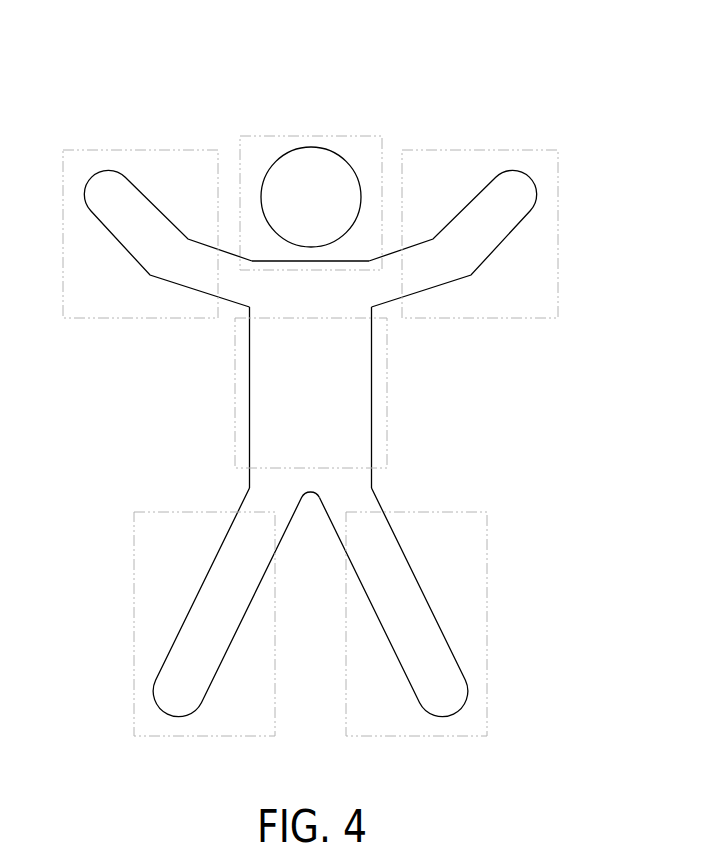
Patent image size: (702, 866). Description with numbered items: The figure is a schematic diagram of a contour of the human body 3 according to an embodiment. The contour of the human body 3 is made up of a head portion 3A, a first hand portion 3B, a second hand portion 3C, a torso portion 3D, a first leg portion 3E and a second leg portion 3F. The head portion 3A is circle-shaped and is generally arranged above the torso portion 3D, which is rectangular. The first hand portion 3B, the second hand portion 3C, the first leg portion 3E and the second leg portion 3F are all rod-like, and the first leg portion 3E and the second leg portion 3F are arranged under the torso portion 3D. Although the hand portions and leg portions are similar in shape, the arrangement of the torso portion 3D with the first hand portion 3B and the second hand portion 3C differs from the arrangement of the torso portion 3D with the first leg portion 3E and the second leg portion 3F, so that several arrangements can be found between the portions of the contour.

The contour of the human body 3 is at (86, 42).
The head portion 3A is at (326, 136).
The first hand portion 3B is at (140, 150).
The second hand portion 3C is at (478, 150).
The torso portion 3D is at (387, 392).
The first leg portion 3E is at (134, 622).
The second leg portion 3F is at (487, 622).